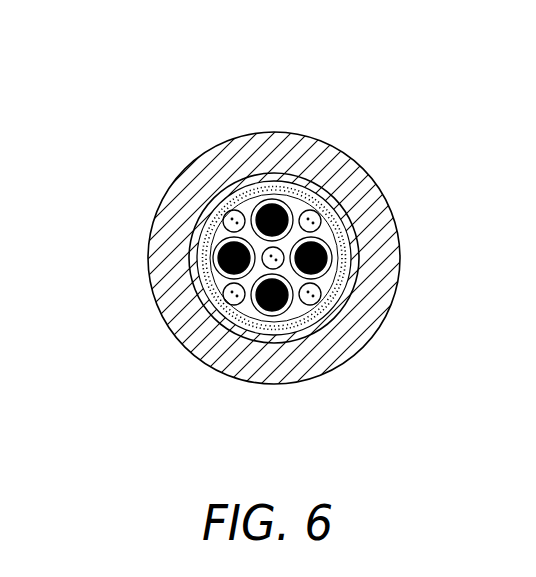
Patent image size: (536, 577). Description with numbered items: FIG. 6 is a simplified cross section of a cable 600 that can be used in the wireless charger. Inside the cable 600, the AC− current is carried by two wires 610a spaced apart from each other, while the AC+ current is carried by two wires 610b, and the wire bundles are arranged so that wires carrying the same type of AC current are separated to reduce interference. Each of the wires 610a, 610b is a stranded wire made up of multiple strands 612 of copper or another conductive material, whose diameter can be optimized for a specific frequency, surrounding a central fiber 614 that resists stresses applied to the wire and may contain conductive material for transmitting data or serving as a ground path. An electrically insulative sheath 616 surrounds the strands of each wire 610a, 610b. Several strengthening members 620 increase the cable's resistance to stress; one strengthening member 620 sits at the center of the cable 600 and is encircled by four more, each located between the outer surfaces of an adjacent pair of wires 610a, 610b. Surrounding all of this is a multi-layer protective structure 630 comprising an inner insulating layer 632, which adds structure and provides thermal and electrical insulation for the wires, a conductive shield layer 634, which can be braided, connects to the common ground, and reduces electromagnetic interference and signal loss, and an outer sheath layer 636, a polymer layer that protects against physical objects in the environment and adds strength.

The cable 600 is at (116, 96).
The wires 610a is at (267, 204).
The wires 610b is at (337, 253).
The strands 612 is at (268, 259).
The central fiber 614 is at (236, 299).
The electrically insulative sheath 616 is at (273, 317).
The strengthening member 620 is at (228, 242).
The multi-layer protective structure 630 is at (268, 233).
The inner insulating layer 632 is at (295, 322).
The conductive shield layer 634 is at (327, 318).
The outer sheath layer 636 is at (372, 295).